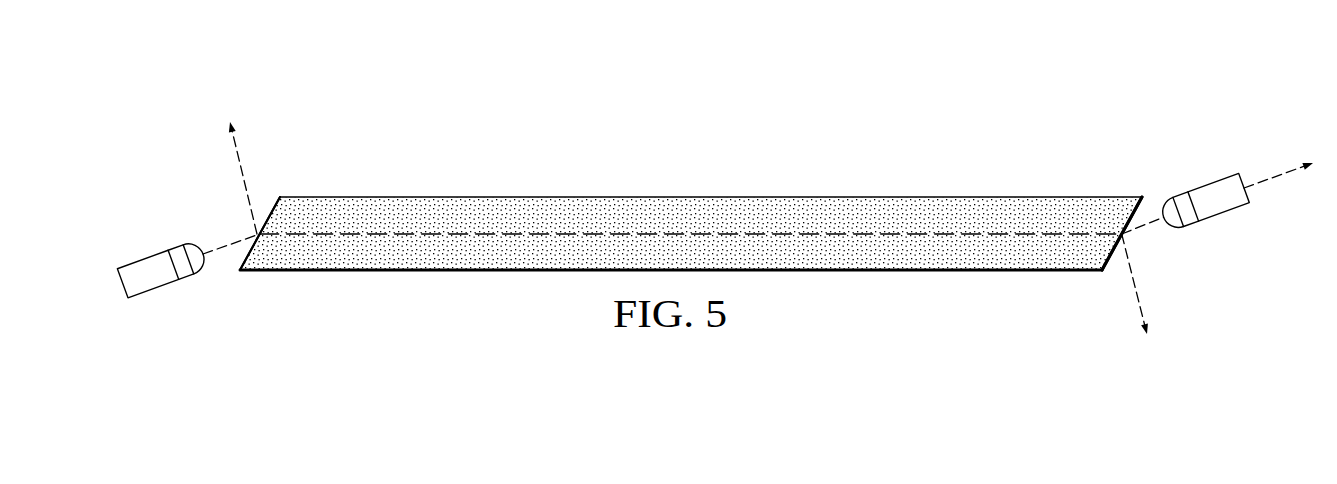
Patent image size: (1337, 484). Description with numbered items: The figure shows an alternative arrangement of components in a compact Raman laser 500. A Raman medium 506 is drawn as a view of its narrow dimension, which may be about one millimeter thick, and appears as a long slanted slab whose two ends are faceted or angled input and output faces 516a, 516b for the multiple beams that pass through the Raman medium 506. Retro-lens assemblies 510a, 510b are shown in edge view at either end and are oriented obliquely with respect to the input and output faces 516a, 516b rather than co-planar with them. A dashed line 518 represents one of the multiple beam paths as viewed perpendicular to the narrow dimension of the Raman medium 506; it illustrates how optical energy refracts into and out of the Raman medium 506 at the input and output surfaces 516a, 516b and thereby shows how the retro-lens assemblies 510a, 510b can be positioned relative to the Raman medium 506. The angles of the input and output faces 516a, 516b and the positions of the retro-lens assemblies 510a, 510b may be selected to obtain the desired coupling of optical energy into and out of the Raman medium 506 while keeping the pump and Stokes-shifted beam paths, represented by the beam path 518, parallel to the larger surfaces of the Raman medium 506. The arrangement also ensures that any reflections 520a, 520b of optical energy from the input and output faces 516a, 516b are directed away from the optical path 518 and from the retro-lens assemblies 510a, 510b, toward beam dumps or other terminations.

The compact Raman laser 500 is at (764, 73).
The Raman medium 506 is at (810, 197).
The retro-lens assembly 510a is at (1207, 185).
The retro-lens assembly 510b is at (160, 287).
The input and output face 516a is at (269, 213).
The input and output face 516b is at (1109, 262).
The beam path 518 is at (403, 230).
The reflection 520a is at (244, 180).
The reflection 520b is at (1137, 291).